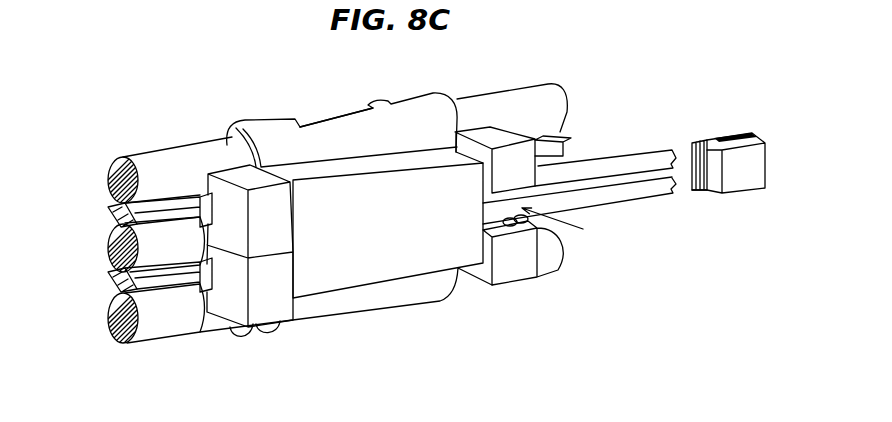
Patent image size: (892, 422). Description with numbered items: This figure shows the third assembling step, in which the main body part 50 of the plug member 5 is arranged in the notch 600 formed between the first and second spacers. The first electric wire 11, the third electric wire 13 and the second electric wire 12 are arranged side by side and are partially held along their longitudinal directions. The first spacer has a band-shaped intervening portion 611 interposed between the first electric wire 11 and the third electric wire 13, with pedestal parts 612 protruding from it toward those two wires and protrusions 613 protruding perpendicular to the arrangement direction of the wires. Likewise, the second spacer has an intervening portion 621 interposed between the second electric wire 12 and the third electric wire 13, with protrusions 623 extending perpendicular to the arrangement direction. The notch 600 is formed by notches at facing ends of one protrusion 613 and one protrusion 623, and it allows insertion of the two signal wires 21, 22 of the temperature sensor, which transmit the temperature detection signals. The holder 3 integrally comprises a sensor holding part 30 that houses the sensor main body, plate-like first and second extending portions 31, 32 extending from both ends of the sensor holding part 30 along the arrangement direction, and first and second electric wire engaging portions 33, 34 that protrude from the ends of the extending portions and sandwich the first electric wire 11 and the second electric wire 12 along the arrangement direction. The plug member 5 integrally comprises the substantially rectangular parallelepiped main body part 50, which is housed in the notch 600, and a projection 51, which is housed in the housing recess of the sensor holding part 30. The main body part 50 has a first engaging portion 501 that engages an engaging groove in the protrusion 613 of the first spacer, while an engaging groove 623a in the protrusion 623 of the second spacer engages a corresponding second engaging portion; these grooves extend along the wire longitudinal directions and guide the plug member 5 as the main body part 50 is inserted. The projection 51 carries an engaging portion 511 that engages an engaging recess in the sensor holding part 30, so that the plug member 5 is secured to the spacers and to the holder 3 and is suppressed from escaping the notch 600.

The holder 3 is at (333, 108).
The plug member 5 is at (772, 133).
The first electric wire 11 is at (108, 170).
The second electric wire 12 is at (114, 330).
The third electric wire 13 is at (114, 252).
The signal wire 21 is at (612, 167).
The signal wire 22 is at (613, 194).
The sensor holding part 30 is at (409, 214).
The first extending portion 31 is at (437, 141).
The second extending portion 32 is at (318, 307).
The first electric wire engaging portion 33 is at (262, 120).
The second electric wire engaging portion 34 is at (277, 333).
The main body part 50 is at (748, 173).
The projection 51 is at (695, 143).
The first engaging portion 501 is at (736, 135).
The engaging portion 511 is at (699, 191).
The notch 600 is at (570, 228).
The intervening portion 611 is at (110, 207).
The pedestal part 612 is at (487, 128).
The protrusion 613 is at (282, 243).
The intervening portion 621 is at (112, 283).
The protrusion 623 is at (513, 278).
The engaging groove 623a is at (523, 222).